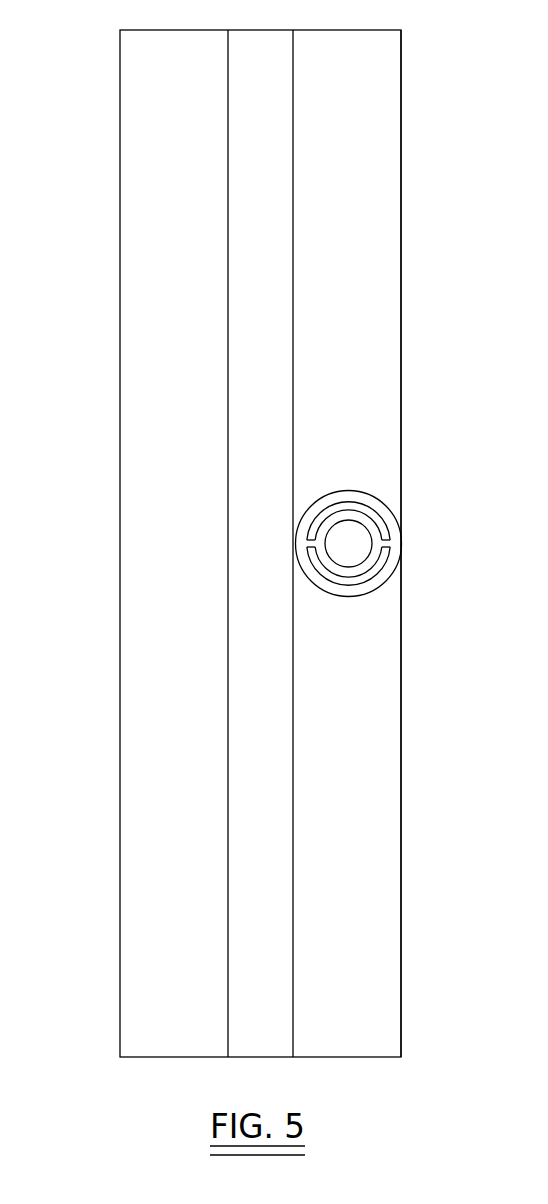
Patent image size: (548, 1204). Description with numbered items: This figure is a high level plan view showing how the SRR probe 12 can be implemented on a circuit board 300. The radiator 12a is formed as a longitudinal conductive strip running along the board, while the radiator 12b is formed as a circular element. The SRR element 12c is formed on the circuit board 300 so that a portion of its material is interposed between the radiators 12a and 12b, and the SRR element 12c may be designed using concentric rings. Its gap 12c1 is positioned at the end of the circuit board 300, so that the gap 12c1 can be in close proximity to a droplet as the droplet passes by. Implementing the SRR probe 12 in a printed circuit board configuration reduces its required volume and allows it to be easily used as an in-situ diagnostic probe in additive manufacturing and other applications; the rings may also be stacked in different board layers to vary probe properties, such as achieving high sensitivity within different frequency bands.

The SRR probe 12 is at (424, 165).
The circuit board 300 is at (375, 275).
The radiator 12a is at (247, 608).
The radiator 12b is at (348, 519).
The SRR element 12c is at (359, 588).
The gap 12c1 is at (396, 548).